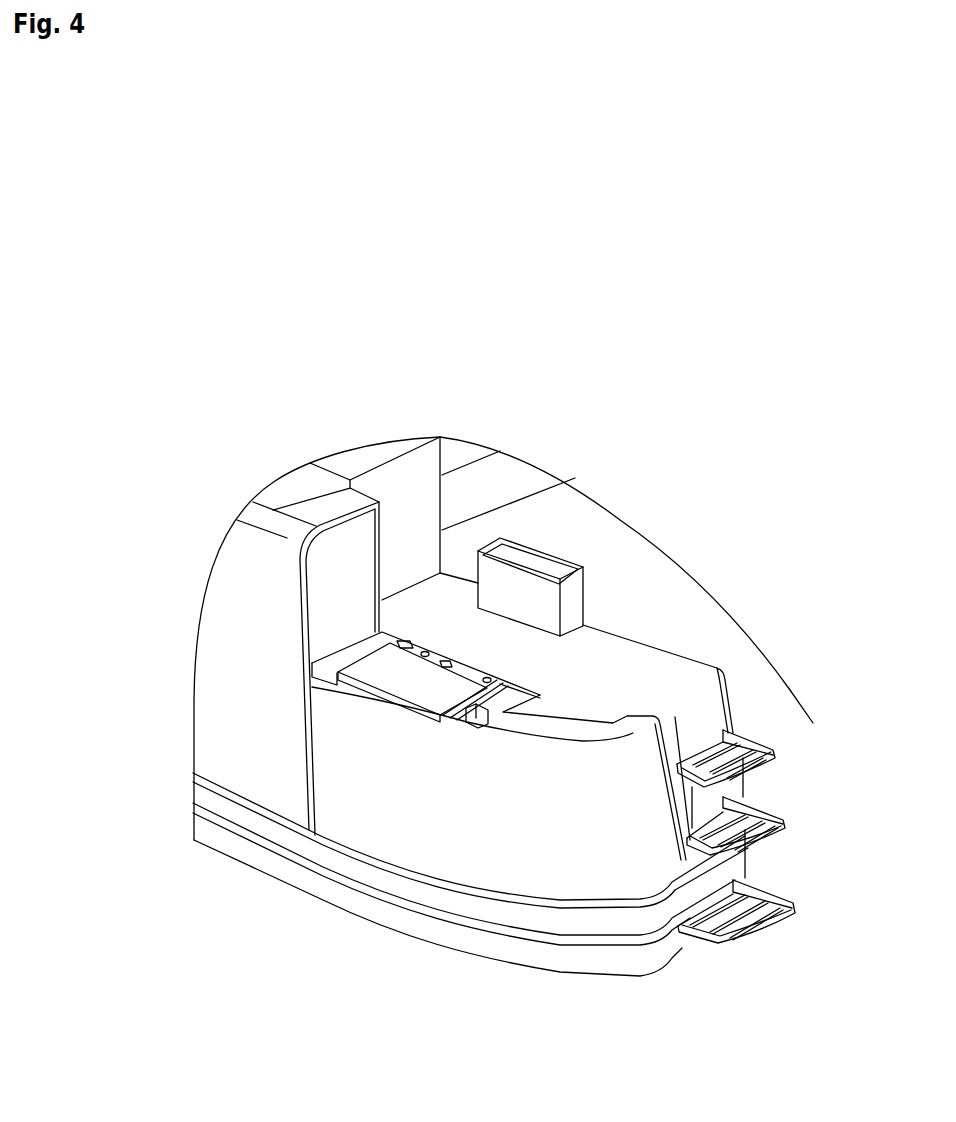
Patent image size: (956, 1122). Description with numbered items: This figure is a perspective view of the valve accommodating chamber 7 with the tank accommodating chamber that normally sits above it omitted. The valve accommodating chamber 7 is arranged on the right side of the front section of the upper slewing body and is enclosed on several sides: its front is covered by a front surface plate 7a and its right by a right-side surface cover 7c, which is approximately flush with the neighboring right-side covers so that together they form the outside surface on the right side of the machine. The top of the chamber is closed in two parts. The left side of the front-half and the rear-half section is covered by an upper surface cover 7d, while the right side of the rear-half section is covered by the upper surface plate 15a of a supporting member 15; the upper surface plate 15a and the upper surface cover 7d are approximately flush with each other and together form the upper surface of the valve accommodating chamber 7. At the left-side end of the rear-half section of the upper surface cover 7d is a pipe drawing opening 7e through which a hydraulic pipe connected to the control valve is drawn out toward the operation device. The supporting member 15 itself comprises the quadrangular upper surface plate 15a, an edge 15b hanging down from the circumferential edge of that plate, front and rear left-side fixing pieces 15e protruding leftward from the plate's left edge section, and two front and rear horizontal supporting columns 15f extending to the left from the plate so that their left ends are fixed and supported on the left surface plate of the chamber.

The valve accommodating chamber 7 is at (405, 822).
The front surface plate 7a is at (705, 722).
The right-side surface cover 7c is at (492, 860).
The upper surface cover 7d is at (617, 662).
The pipe drawing opening 7e is at (530, 558).
The supporting member 15 is at (361, 649).
The upper surface plate 15a is at (397, 668).
The edge 15b is at (357, 687).
The left-side fixing pieces 15e is at (492, 677).
The horizontal supporting columns 15f is at (500, 710).